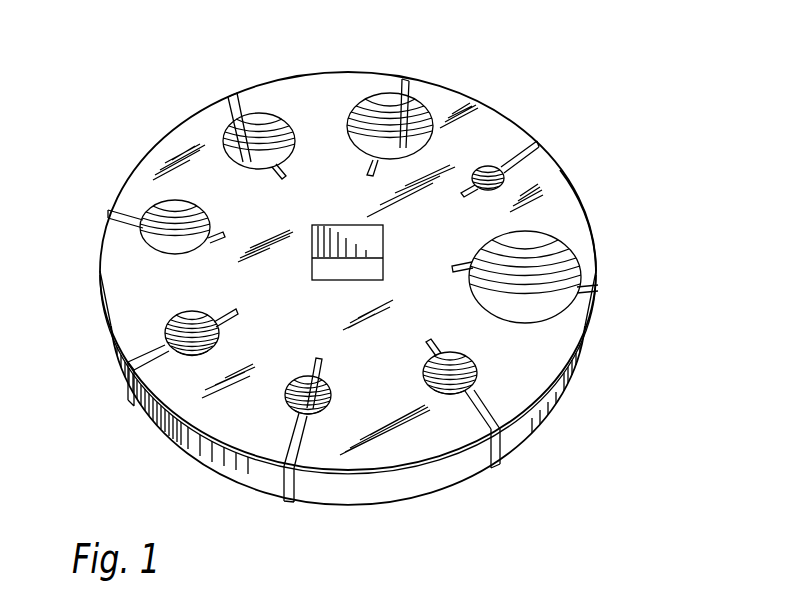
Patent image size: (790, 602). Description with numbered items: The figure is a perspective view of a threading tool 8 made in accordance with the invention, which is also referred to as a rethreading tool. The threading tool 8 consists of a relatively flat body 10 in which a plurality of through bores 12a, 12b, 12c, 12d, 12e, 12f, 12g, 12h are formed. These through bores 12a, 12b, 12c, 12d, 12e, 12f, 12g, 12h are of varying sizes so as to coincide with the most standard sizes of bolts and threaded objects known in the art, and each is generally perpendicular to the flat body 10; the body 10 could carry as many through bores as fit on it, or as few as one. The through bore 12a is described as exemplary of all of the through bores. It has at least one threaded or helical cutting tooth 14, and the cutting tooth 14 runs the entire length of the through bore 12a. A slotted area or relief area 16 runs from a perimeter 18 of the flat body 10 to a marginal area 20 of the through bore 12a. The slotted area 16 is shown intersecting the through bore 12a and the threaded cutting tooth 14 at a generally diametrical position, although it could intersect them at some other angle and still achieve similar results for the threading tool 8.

The threading tool 8 is at (130, 136).
The body 10 is at (515, 105).
The through bore 12a is at (557, 298).
The through bore 12b is at (478, 362).
The through bore 12c is at (283, 388).
The through bore 12d is at (194, 312).
The through bore 12e is at (174, 228).
The through bore 12f is at (275, 172).
The through bore 12g is at (391, 142).
The through bore 12h is at (503, 163).
The threaded cutting tooth 14 is at (548, 262).
The slotted area 16 is at (600, 283).
The perimeter 18 is at (590, 360).
The marginal area 20 is at (457, 262).